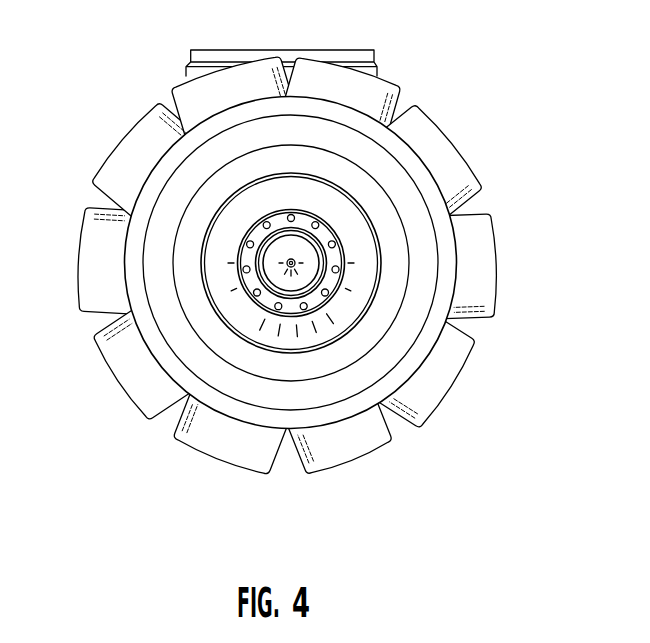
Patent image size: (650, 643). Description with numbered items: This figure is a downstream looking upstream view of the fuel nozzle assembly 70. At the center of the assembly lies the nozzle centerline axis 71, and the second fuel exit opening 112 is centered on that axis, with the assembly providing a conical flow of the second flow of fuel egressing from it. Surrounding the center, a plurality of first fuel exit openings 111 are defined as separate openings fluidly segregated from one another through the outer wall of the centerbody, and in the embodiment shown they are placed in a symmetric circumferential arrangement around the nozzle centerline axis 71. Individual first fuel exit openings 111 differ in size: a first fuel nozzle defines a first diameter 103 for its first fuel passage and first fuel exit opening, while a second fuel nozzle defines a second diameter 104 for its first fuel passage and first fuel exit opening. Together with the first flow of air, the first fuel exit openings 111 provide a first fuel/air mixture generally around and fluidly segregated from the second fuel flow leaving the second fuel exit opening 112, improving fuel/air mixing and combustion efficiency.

The fuel nozzle assembly 70 is at (277, 274).
The nozzle centerline axis 71 is at (294, 260).
The first diameter 103 is at (254, 294).
The second diameter 104 is at (243, 270).
The first fuel exit opening 111 is at (277, 310).
The second fuel exit opening 112 is at (291, 268).